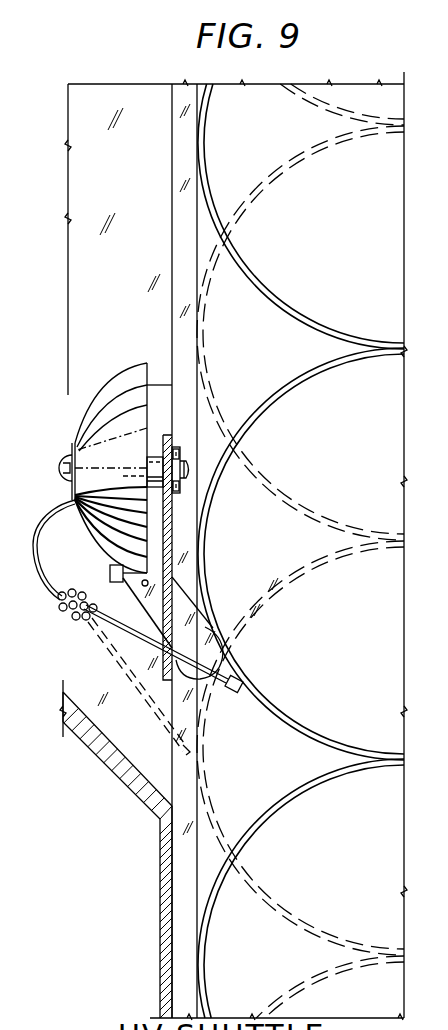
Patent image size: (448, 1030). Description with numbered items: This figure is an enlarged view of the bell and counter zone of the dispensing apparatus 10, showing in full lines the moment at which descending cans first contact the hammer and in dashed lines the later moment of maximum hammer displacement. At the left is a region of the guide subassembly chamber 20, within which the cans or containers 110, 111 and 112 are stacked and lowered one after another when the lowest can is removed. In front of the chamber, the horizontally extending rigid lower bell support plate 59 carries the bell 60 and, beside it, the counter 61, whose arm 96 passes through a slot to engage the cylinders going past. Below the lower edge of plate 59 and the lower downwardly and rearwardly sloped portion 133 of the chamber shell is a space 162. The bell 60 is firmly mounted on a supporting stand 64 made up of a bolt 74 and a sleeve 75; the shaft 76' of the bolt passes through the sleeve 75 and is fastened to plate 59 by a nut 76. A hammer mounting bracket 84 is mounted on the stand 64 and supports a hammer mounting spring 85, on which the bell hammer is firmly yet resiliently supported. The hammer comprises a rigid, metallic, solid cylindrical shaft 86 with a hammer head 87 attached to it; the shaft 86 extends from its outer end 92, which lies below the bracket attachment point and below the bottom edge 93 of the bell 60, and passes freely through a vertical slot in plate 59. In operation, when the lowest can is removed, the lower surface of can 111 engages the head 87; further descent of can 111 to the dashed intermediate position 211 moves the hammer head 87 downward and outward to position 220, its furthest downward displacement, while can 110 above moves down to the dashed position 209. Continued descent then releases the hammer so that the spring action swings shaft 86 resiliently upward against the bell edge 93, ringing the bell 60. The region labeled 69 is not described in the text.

The apparatus 10 is at (157, 929).
The guide subassembly chamber 20 is at (203, 851).
The lower bell support plate 59 is at (174, 539).
The bell 60 is at (119, 372).
The counter 61 is at (110, 568).
The supporting stand 64 is at (177, 449).
The housing region 69 is at (133, 192).
The bolt 74 is at (60, 473).
The sleeve 75 is at (152, 456).
The nut 76 is at (195, 461).
The shaft of the bolt 76' is at (214, 484).
The hammer mounting bracket 84 is at (30, 564).
The hammer mounting spring 85 is at (62, 610).
The hammer shaft 86 is at (201, 645).
The hammer head 87 is at (238, 677).
The outer end of hammer shaft 92 is at (86, 622).
The bottom edge of bell 93 is at (129, 578).
The arm of the counter 96 is at (158, 618).
The can 110 is at (250, 139).
The can 111 is at (362, 621).
The can 112 is at (350, 834).
The lower downwardly and rearwardly sloped portion 133 is at (118, 780).
The space 162 is at (163, 736).
The lowered position of can 110 209 is at (210, 376).
The intermediate position of can 111 211 is at (292, 915).
The hammer head displaced position 220 is at (181, 752).